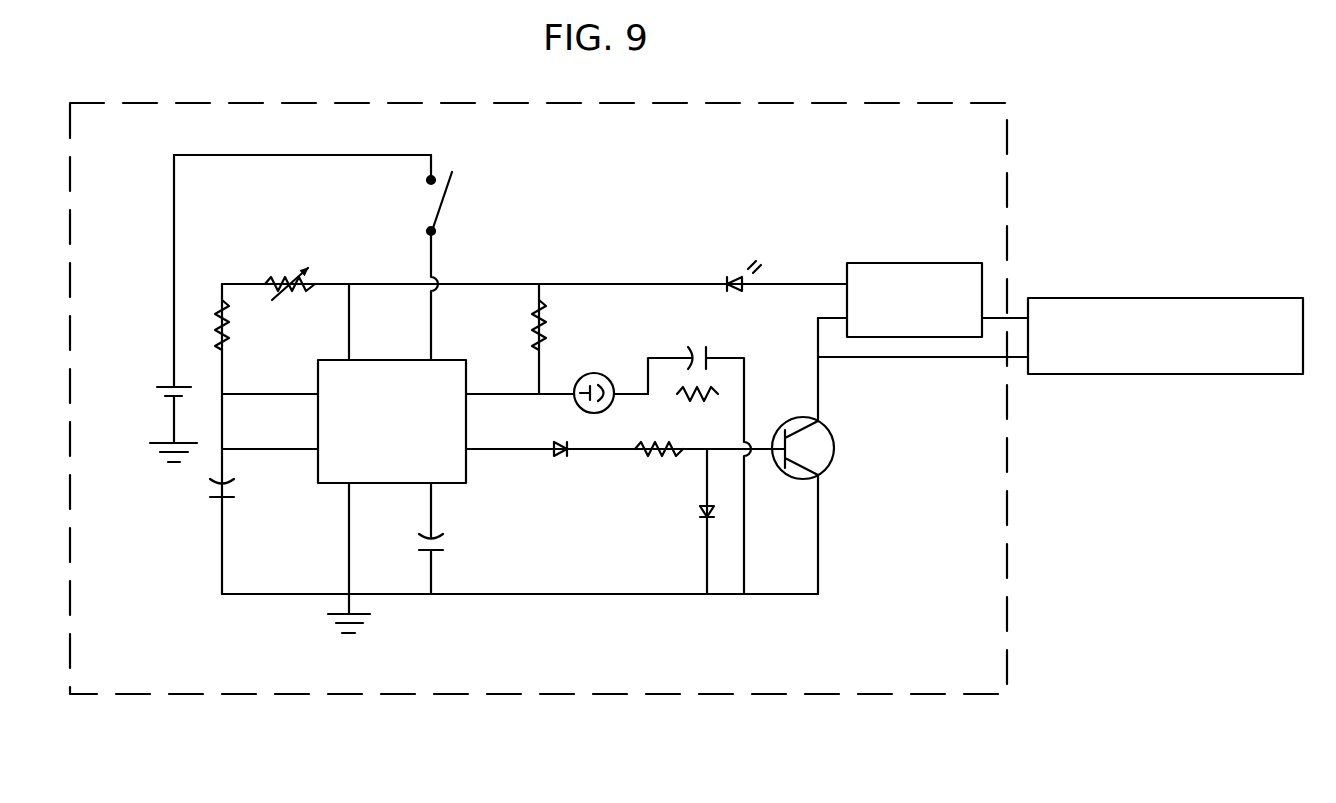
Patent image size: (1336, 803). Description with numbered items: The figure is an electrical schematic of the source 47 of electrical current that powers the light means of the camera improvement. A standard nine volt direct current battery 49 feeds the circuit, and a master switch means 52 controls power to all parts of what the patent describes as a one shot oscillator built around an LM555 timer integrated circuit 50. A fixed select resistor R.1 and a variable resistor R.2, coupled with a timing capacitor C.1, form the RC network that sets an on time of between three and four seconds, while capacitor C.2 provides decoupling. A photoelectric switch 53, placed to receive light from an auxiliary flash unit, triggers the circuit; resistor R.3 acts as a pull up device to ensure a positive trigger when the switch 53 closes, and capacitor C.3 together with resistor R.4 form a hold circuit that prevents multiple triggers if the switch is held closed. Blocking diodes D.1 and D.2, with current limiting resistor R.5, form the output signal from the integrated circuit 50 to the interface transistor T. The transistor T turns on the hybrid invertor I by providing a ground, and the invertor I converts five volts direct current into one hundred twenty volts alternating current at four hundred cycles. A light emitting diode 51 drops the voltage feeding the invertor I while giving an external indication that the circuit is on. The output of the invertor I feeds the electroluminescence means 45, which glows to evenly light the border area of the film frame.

The electroluminescence means 45 is at (1222, 370).
The source of electrical current 47 is at (153, 361).
The battery 49 is at (170, 398).
The integrated circuit 50 is at (336, 477).
The light emitting diode 51 is at (726, 262).
The master switch means 52 is at (456, 214).
The photoelectric switch 53 is at (606, 366).
The hybrid invertor I is at (903, 272).
The interface transistor T is at (898, 492).
The select resistor R.1 is at (212, 330).
The variable resistor R.2 is at (330, 224).
The fixed resistor R.3 is at (524, 333).
The fixed resistor R.4 is at (698, 406).
The fixed resistor R.5 is at (660, 462).
The timing capacitor C.1 is at (204, 500).
The capacitor C.2 is at (450, 548).
The capacitor C.3 is at (706, 344).
The diode D.1 is at (690, 522).
The diode D.2 is at (557, 462).